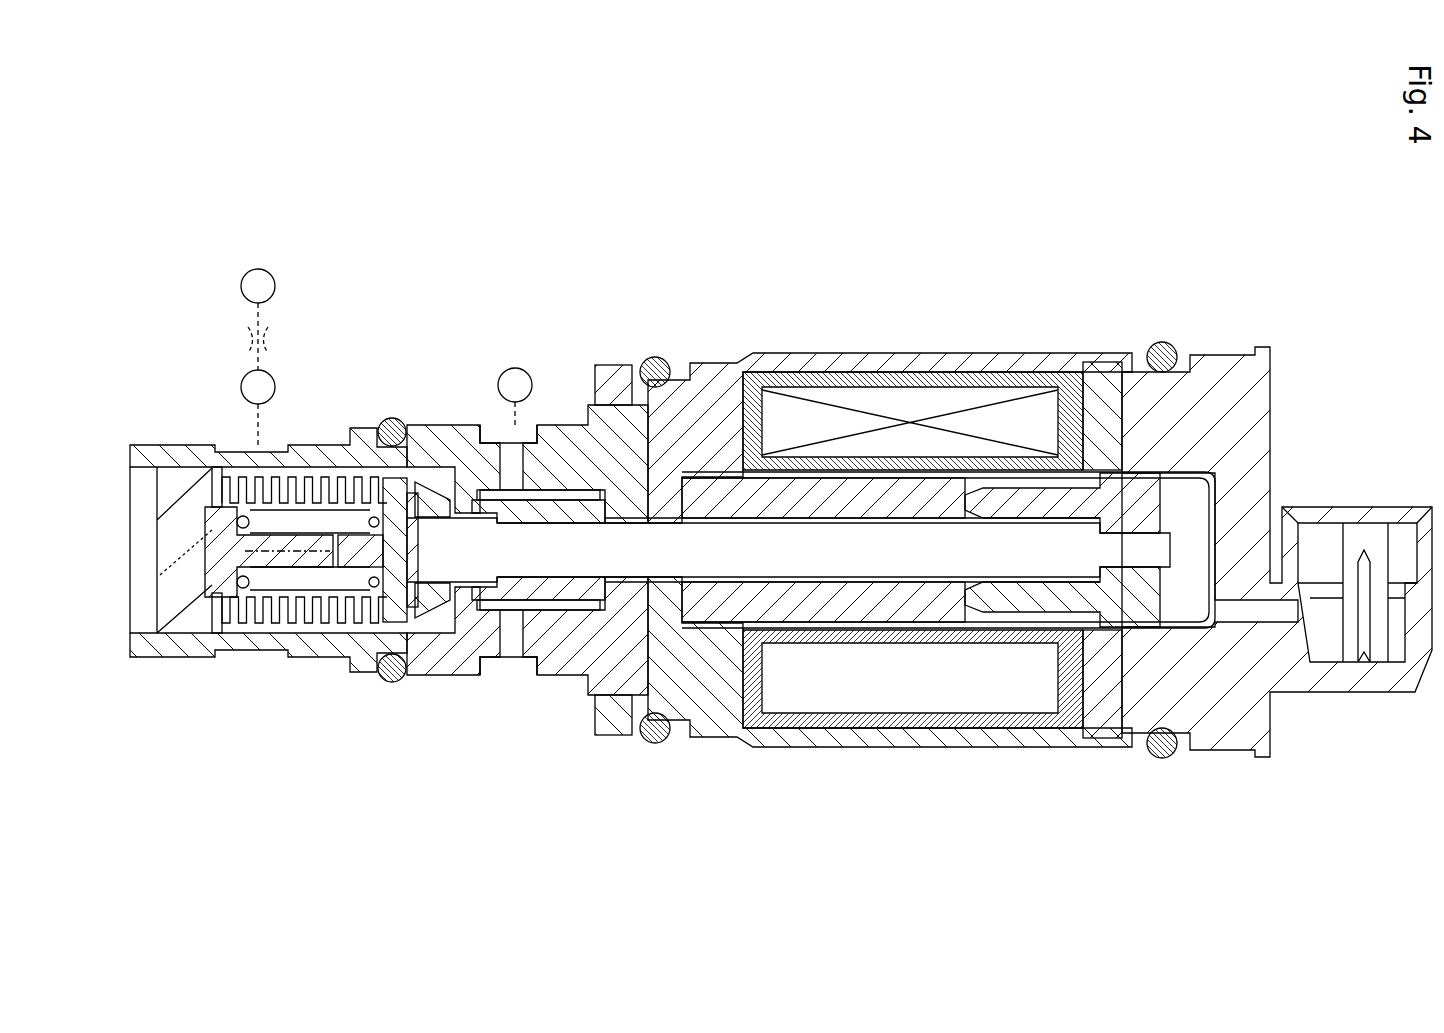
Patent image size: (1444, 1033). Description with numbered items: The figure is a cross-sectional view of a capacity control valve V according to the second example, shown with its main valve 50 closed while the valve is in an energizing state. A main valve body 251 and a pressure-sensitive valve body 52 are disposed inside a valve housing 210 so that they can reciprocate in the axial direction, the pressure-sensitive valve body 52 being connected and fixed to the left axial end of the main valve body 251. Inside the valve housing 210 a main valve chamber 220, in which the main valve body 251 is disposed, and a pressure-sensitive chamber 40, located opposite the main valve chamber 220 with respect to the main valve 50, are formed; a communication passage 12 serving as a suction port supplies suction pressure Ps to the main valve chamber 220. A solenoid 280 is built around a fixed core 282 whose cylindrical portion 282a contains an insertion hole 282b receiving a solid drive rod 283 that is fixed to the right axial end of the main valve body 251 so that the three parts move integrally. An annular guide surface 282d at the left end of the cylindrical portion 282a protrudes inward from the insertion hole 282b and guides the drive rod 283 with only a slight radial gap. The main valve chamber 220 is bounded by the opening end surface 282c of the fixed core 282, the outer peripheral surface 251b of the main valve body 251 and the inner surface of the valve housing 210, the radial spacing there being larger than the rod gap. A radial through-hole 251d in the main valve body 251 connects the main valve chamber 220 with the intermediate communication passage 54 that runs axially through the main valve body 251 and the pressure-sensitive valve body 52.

The capacity control valve V is at (213, 322).
The valve housing 210 is at (128, 405).
The pressure-sensitive chamber 40 is at (225, 468).
The pressure-sensitive valve body 52 is at (425, 476).
The intermediate communication passage 54 is at (405, 652).
The main valve 50 is at (456, 492).
The communication passage 12 is at (491, 514).
The main valve chamber 220 is at (563, 494).
The main valve body 251 is at (547, 548).
The outer peripheral surface 251b is at (583, 491).
The through-hole 251d is at (534, 600).
The solenoid 280 is at (905, 521).
The fixed core 282 is at (1046, 514).
The cylindrical portion 282a is at (963, 465).
The insertion hole 282b is at (833, 523).
The opening end surface 282c is at (583, 617).
The guide surface 282d is at (640, 535).
The drive rod 283 is at (1086, 405).